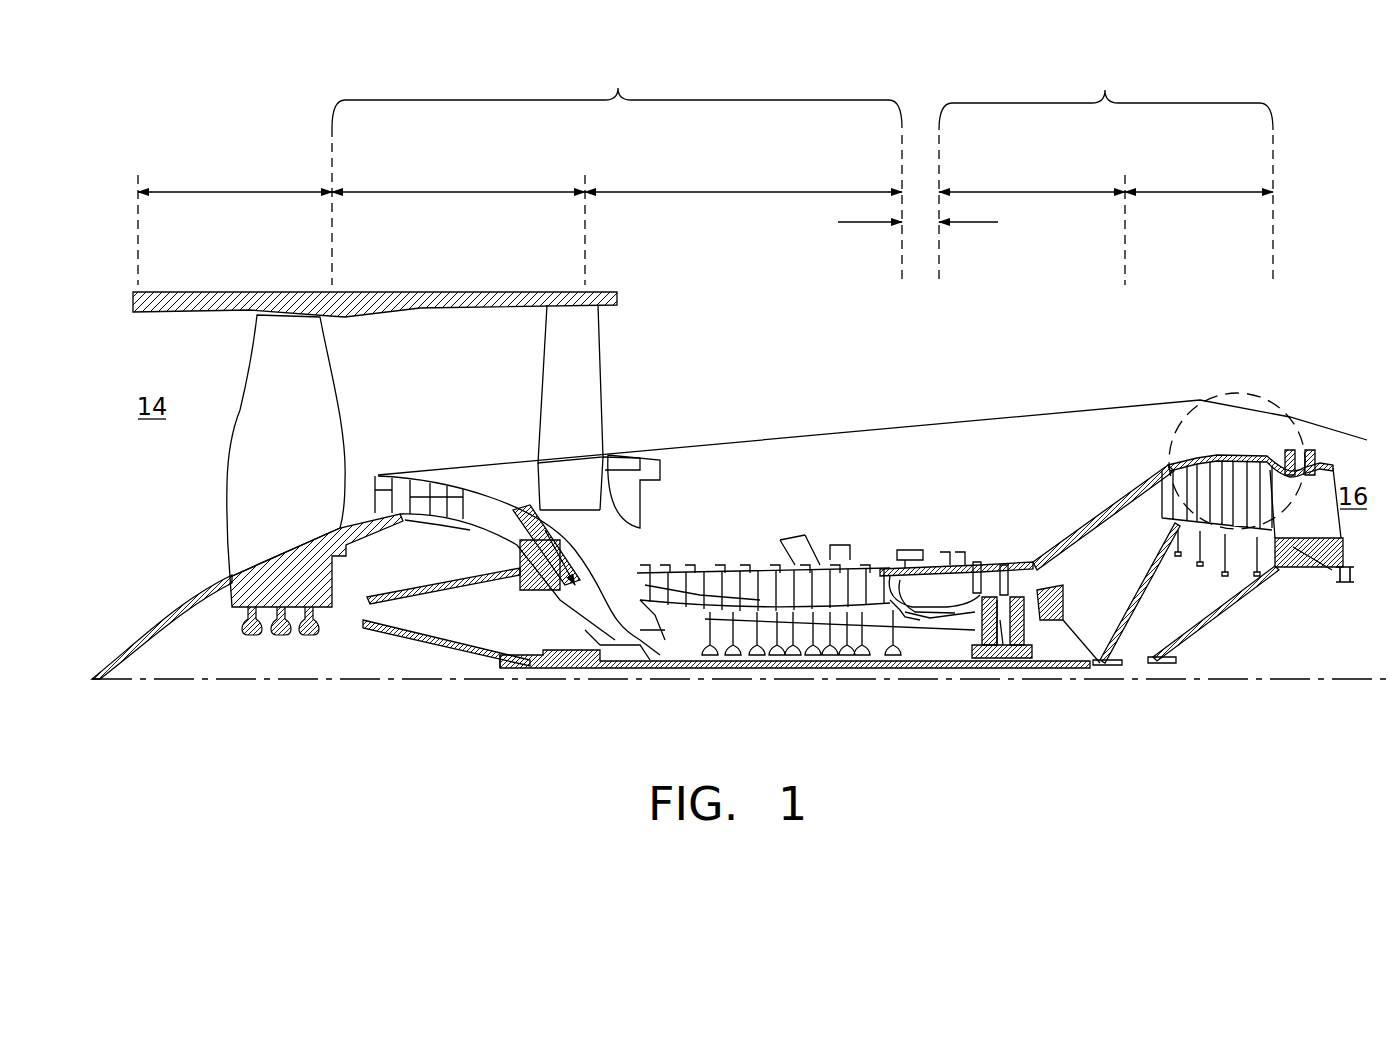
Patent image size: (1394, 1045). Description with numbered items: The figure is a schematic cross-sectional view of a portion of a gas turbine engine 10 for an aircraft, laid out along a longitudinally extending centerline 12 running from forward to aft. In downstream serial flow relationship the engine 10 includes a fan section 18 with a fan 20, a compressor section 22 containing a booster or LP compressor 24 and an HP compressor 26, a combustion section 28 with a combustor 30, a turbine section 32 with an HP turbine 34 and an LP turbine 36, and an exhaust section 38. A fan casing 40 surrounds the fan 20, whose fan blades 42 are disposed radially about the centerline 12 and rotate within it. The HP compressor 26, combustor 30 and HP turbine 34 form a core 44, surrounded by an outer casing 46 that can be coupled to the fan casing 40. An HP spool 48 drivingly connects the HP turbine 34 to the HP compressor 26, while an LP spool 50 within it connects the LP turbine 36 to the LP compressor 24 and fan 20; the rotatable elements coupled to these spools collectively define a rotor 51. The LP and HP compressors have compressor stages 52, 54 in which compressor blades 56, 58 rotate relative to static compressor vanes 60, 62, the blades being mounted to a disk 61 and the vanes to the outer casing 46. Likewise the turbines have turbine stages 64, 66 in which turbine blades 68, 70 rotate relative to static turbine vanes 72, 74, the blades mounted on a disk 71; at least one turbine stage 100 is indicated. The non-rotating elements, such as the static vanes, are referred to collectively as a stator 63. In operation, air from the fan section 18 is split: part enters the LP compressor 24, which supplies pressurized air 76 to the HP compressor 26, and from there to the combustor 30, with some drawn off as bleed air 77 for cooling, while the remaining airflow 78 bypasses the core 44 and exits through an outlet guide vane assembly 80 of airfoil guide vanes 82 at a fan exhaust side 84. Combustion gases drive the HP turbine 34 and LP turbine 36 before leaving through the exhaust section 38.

The gas turbine engine 10 is at (1285, 218).
The centerline 12 is at (217, 679).
The fan section 18 is at (248, 188).
The fan 20 is at (210, 535).
The compressor section 22 is at (618, 88).
The LP compressor 24 is at (478, 188).
The HP compressor 26 is at (760, 188).
The combustion section 28 is at (850, 222).
The combustor 30 is at (940, 548).
The turbine section 32 is at (1105, 90).
The HP turbine 34 is at (1032, 188).
The LP turbine 36 is at (1196, 188).
The exhaust section 38 is at (1340, 477).
The fan casing 40 is at (375, 290).
The fan blades 42 is at (300, 352).
The core 44 is at (868, 462).
The outer casing 46 is at (1112, 505).
The HP spool 48 is at (900, 660).
The LP spool 50 is at (520, 663).
The rotor 51 is at (770, 670).
The compressor stages 52 is at (405, 446).
The compressor stages 54 is at (740, 530).
The compressor blades 56 is at (436, 471).
The compressor blades 58 is at (670, 580).
The static compressor vanes 60 is at (382, 478).
The disk 61 is at (425, 525).
The static compressor vanes 62 is at (655, 560).
The stator 63 is at (647, 643).
The turbine stages 64 is at (1020, 564).
The turbine stages 66 is at (1247, 461).
The turbine blades 68 is at (995, 575).
The turbine blades 70 is at (1262, 462).
The disk 71 is at (1005, 622).
The static turbine vanes 72 is at (985, 575).
The static turbine vanes 74 is at (1238, 462).
The pressurized air 76 is at (555, 598).
The bleed air 77 is at (765, 555).
The airflow 78 is at (637, 365).
The outlet guide vane assembly 80 is at (612, 420).
The airfoil guide vanes 82 is at (552, 397).
The fan exhaust side 84 is at (618, 340).
The turbine stage 100 is at (953, 630).